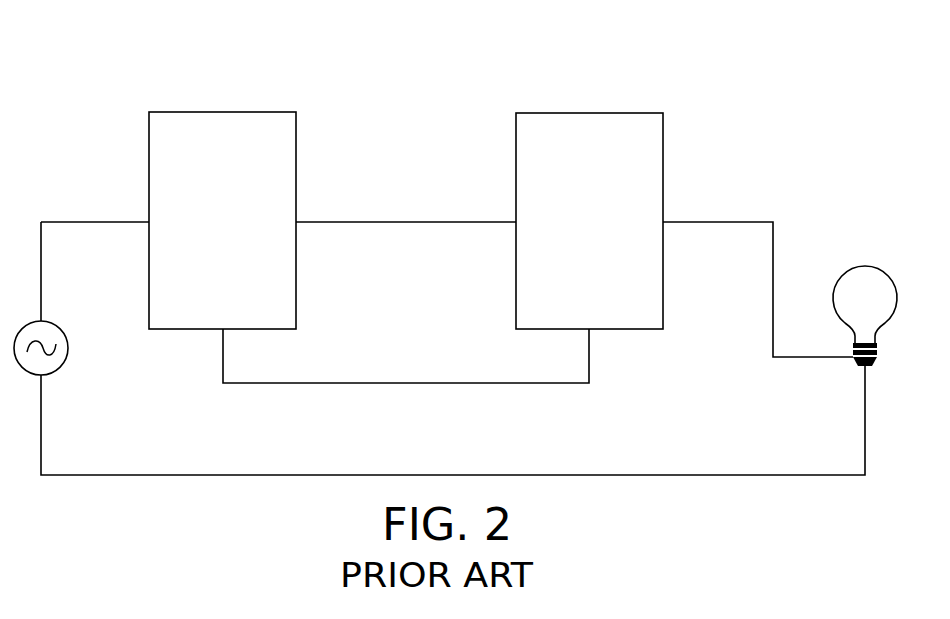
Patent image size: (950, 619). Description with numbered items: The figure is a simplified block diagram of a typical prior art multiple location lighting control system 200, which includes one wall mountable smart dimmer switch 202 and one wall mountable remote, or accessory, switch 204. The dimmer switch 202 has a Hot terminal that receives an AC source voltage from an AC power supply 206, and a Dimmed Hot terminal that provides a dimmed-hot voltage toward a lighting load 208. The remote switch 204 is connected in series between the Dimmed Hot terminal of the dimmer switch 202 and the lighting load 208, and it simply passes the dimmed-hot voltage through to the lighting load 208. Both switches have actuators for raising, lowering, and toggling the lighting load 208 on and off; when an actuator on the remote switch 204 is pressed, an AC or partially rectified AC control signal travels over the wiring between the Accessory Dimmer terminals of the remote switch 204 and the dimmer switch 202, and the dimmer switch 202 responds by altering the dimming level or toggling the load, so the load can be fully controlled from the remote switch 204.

The multiple location lighting control system 200 is at (391, 126).
The smart dimmer switch 202 is at (212, 112).
The remote switch 204 is at (570, 112).
The AC power supply 206 is at (57, 370).
The lighting load 208 is at (872, 268).